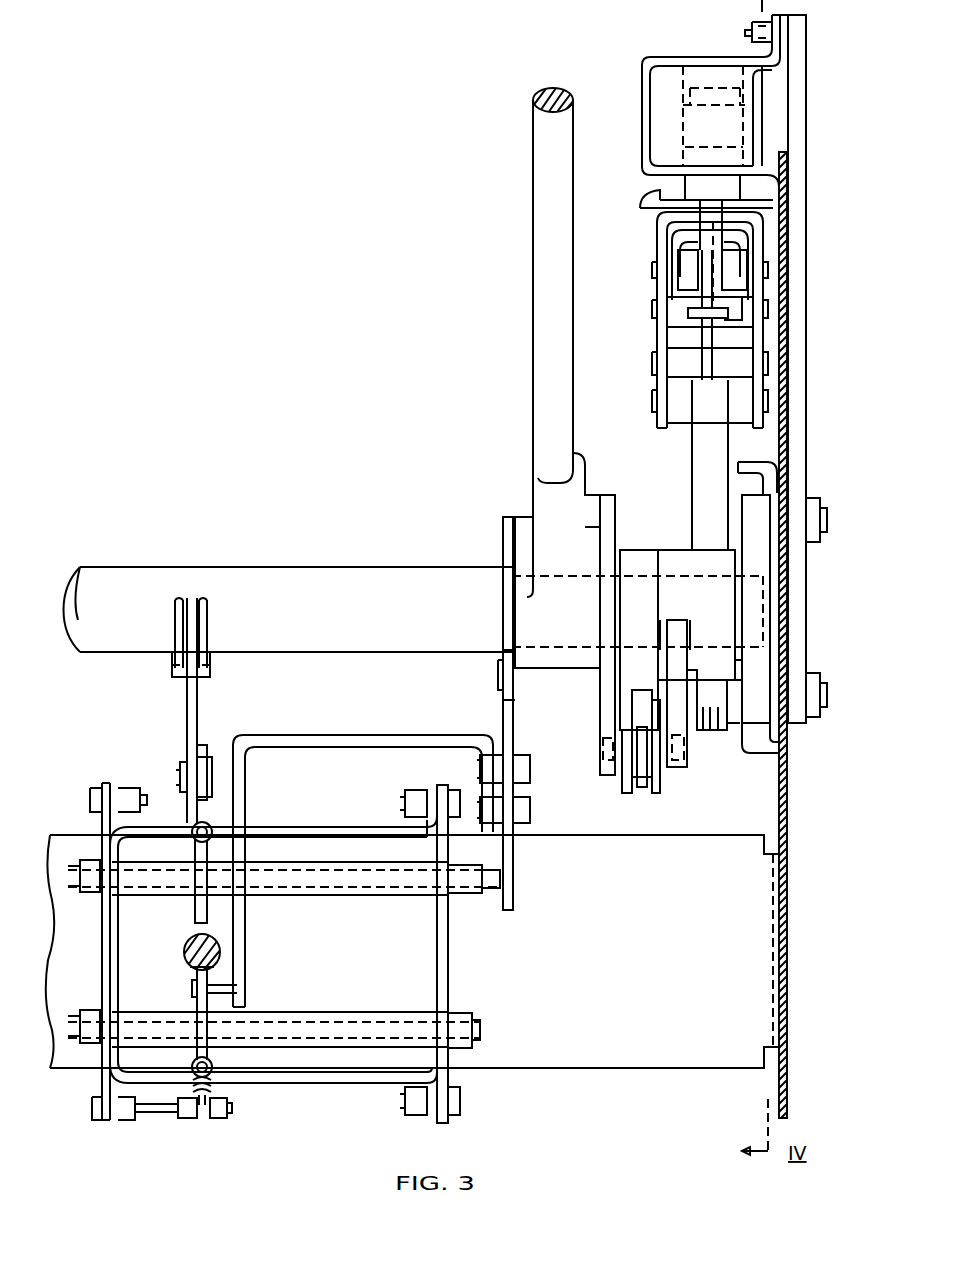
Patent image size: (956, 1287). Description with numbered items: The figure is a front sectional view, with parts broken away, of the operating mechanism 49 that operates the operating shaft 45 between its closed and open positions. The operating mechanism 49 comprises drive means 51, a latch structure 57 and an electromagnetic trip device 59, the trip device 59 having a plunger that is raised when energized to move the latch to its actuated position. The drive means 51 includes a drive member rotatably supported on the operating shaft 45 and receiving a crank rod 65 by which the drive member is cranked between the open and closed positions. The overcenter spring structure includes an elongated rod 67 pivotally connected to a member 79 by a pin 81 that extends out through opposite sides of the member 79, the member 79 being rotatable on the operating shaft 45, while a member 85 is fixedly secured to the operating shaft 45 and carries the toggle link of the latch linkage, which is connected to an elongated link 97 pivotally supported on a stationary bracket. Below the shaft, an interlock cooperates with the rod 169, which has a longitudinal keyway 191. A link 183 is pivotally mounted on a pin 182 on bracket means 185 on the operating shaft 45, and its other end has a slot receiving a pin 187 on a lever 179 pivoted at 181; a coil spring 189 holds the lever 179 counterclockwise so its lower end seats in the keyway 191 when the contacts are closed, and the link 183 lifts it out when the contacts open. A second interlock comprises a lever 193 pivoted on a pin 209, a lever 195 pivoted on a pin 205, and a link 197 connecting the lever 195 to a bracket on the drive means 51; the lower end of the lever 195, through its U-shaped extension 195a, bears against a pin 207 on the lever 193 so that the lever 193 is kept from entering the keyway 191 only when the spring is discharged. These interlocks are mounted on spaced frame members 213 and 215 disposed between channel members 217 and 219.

The operating shaft 45 is at (317, 652).
The operating mechanism 49 is at (685, 320).
The drive means 51 is at (556, 560).
The latch structure 57 is at (712, 272).
The trip device 59 is at (709, 132).
The crank rod 65 is at (574, 165).
The elongated rod 67 is at (642, 788).
The member 79 is at (640, 555).
The pin 81 is at (674, 770).
The member 85 is at (678, 555).
The elongated link 97 is at (712, 437).
The rod 169 is at (192, 940).
The lever 179 is at (205, 752).
The pivot 181 is at (172, 892).
The pin 182 is at (172, 665).
The link 183 is at (187, 702).
The bracket means 185 is at (207, 621).
The pin 187 is at (180, 778).
The coil spring 189 is at (190, 840).
The keyway 191 is at (185, 958).
The lever 193 is at (197, 1010).
The lever 195 is at (504, 716).
The U-shaped extension 195a is at (355, 734).
The link 197 is at (510, 676).
The pin 205 is at (488, 893).
The pin 207 is at (256, 985).
The pin 209 is at (354, 1022).
The frame member 213 is at (100, 940).
The frame member 215 is at (450, 951).
The channel member 217 is at (332, 826).
The channel member 219 is at (296, 1078).